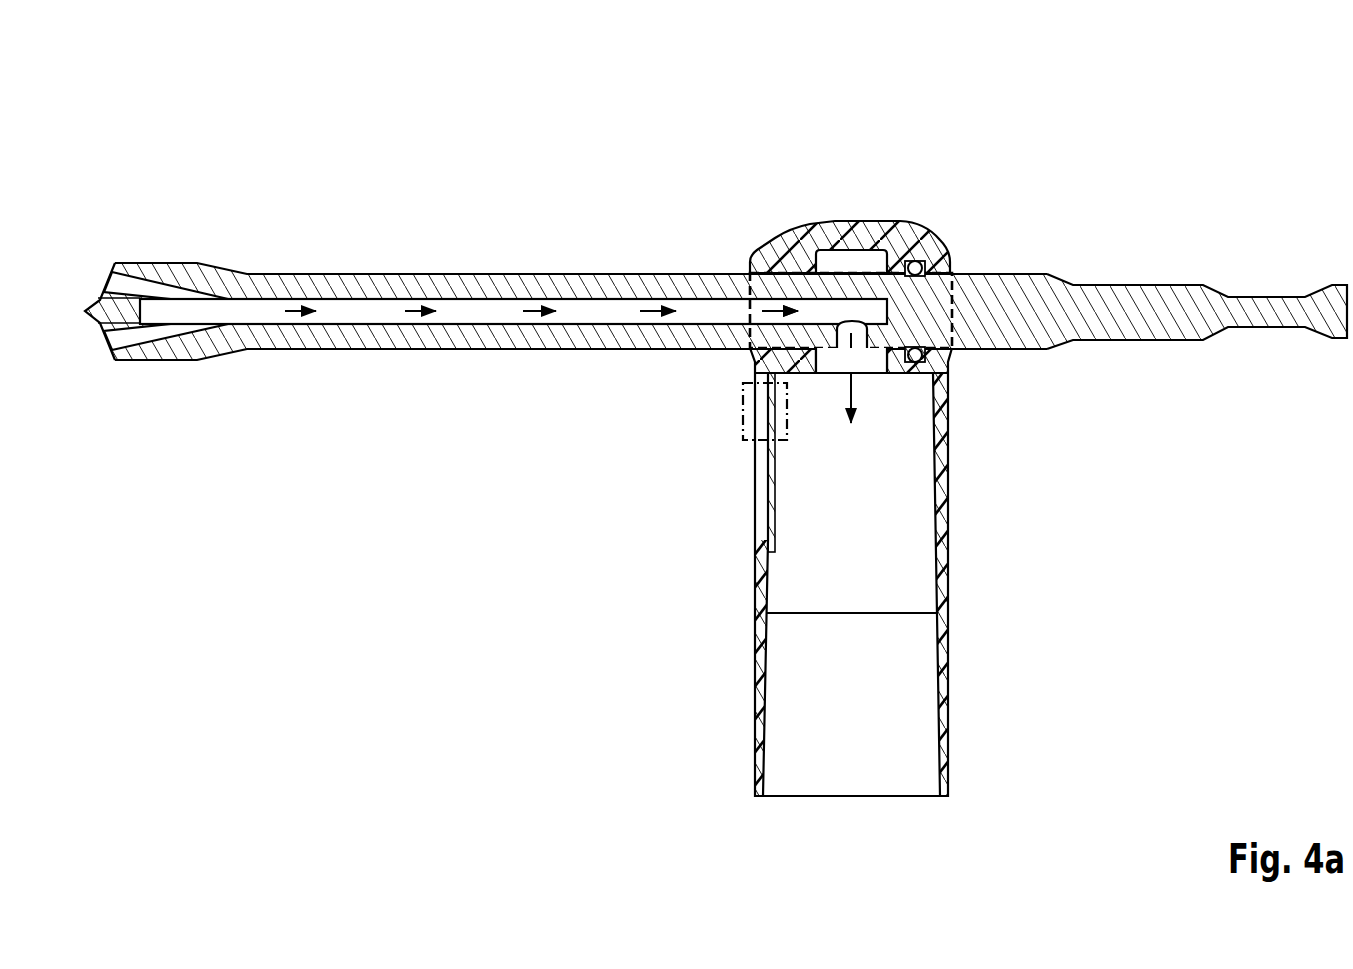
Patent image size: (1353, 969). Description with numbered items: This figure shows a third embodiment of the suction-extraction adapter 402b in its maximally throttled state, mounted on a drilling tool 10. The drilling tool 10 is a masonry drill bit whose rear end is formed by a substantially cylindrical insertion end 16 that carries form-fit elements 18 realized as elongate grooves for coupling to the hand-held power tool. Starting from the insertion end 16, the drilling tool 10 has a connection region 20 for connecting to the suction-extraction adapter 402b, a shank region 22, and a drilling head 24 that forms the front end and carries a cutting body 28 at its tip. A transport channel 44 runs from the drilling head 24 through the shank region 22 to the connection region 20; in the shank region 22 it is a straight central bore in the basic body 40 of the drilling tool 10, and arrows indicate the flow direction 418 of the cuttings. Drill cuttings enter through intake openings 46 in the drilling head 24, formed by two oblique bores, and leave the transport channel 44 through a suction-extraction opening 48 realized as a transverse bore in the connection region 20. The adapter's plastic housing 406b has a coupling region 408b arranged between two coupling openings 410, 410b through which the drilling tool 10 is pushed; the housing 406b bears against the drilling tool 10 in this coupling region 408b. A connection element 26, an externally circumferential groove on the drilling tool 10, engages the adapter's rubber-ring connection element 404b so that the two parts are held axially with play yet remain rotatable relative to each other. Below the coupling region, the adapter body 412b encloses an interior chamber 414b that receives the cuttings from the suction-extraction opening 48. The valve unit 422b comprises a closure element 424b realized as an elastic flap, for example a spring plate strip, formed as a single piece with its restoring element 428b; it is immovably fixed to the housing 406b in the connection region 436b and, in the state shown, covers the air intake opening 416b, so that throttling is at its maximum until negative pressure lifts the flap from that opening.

The drilling tool 10 is at (639, 148).
The insertion end 16 is at (1205, 246).
The form-fit elements 18 is at (1265, 297).
The connection region 20 is at (857, 166).
The shank region 22 is at (484, 251).
The drilling head 24 is at (165, 210).
The connection element 26 is at (922, 264).
The cutting body 28 is at (97, 311).
The basic body 40 is at (546, 285).
The transport channel 44 is at (601, 309).
The intake openings 46 is at (116, 263).
The suction-extraction opening 48 is at (863, 356).
The suction-extraction adapter 402b is at (919, 201).
The connection element 404b is at (918, 262).
The housing 406b is at (822, 237).
The coupling region 408b is at (743, 310).
The coupling openings 410 is at (966, 267).
The coupling opening 410b is at (743, 355).
The cylinder housing 412b is at (974, 489).
The chamber 414b is at (818, 575).
The air intake opening 416b is at (760, 524).
The flow direction 418 is at (540, 314).
The valve unit 422b is at (812, 502).
The closure element 424b is at (691, 462).
The restoring element 428b is at (770, 486).
The connection region 436b is at (743, 422).